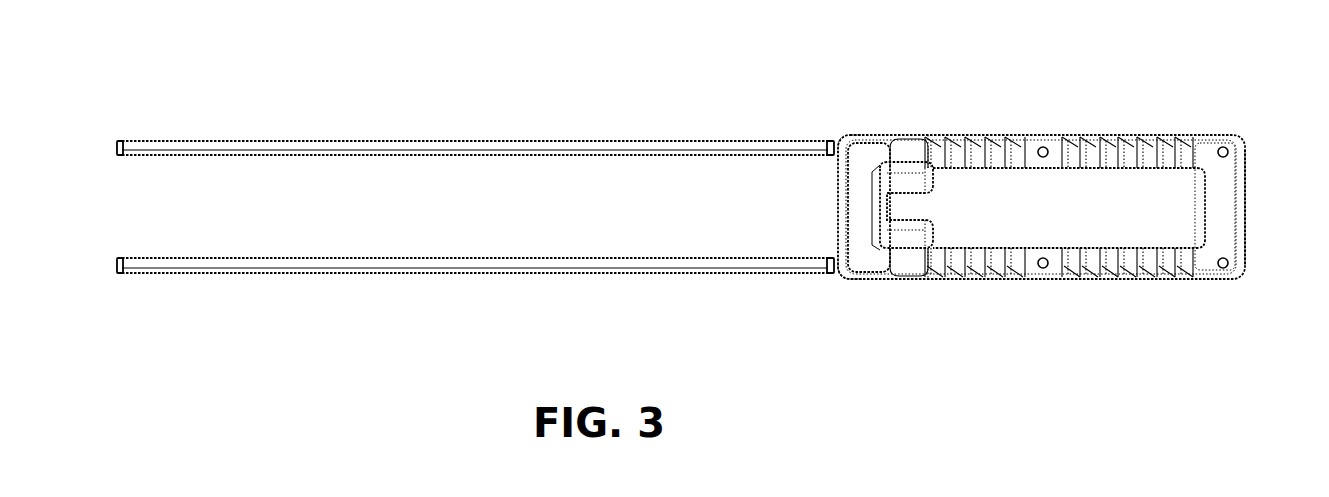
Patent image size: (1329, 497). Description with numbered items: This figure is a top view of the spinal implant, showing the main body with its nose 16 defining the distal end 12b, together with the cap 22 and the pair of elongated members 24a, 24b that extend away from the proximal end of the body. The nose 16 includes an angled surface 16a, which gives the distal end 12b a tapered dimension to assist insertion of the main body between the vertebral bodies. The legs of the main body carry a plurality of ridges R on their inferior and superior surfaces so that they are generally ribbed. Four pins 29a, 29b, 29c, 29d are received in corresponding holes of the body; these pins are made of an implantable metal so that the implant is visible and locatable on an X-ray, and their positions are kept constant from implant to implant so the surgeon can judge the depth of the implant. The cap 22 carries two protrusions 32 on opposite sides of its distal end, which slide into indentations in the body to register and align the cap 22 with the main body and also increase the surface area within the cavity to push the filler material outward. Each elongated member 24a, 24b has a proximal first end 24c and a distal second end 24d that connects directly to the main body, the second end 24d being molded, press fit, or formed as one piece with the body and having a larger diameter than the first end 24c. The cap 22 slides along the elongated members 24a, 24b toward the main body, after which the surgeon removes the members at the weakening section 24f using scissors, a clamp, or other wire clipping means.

The distal end 12b is at (1248, 185).
The nose 16 is at (1243, 207).
The angled surface 16a is at (1238, 207).
The cap 22 is at (845, 228).
The elongated member 24a is at (420, 265).
The elongated member 24b is at (418, 147).
The first end 24c is at (153, 147).
The second end 24d is at (842, 137).
The weakening section 24f is at (831, 139).
The pin 29a is at (1222, 268).
The pin 29b is at (1225, 147).
The pin 29c is at (1045, 268).
The pin 29d is at (1047, 147).
The protrusion 32 is at (905, 172).
The ridges R is at (1110, 145).